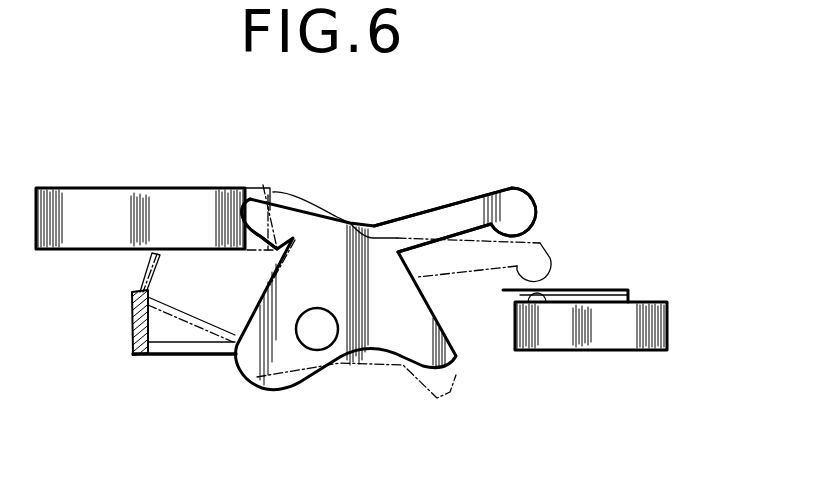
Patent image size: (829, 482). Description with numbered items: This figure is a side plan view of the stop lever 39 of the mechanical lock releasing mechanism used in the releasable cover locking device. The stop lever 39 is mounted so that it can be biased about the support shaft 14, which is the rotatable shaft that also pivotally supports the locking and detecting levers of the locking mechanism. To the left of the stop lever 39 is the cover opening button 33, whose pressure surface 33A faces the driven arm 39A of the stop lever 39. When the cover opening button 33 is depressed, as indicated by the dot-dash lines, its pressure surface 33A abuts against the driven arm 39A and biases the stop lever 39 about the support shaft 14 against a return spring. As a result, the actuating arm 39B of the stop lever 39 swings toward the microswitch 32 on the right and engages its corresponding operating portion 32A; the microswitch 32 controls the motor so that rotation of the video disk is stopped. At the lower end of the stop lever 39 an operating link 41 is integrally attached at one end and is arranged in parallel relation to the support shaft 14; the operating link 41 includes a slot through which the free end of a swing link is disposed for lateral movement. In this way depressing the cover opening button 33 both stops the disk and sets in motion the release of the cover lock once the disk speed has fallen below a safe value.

The support shaft 14 is at (313, 343).
The microswitch 32 is at (625, 337).
The operating portion 32A is at (577, 289).
The cover opening button 33 is at (50, 188).
The pressure surface 33A is at (245, 198).
The stop lever 39 is at (384, 337).
The driven arm 39A is at (263, 200).
The actuating arm 39B is at (508, 187).
The operating link 41 is at (124, 330).